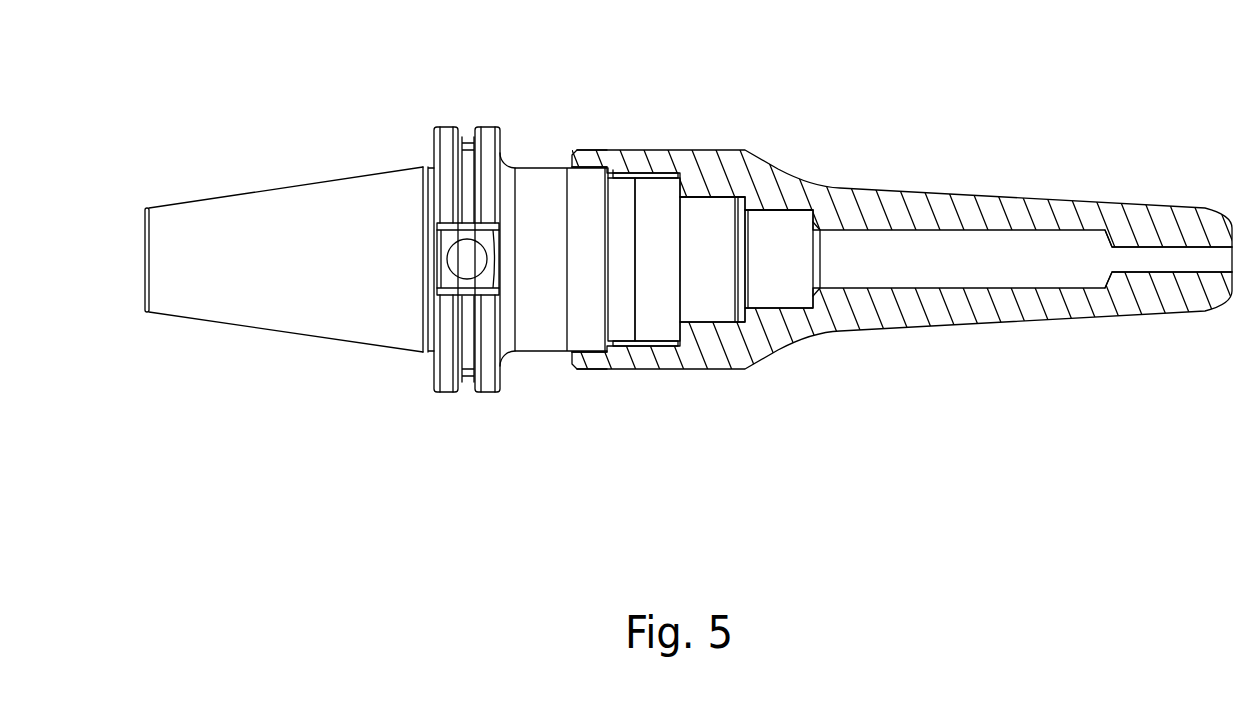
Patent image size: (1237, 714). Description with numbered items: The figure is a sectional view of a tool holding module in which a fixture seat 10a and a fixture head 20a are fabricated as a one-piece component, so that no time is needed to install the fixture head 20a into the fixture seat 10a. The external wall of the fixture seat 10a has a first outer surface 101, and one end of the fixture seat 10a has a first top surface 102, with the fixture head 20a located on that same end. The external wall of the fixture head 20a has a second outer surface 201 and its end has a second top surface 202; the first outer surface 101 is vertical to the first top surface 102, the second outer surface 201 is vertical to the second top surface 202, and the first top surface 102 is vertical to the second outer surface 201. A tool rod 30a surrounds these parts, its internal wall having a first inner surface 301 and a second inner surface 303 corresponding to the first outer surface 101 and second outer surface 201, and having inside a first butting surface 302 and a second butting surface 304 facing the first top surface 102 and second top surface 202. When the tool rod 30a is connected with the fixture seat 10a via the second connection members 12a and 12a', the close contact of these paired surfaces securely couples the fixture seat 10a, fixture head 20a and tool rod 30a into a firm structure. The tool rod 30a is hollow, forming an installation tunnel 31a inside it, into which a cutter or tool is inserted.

The fixture seat 10a is at (345, 177).
The second connection member 12a is at (645, 407).
The second connection member 12a' is at (645, 128).
The fixture head 20a is at (716, 296).
The tool rod 30a is at (1014, 325).
The installation tunnel 31a is at (1150, 257).
The first outer surface 101 is at (543, 98).
The first inner surface 301 is at (583, 150).
The first top surface 102 is at (696, 409).
The first butting surface 302 is at (705, 350).
The second outer surface 201 is at (740, 126).
The second inner surface 303 is at (712, 197).
The second top surface 202 is at (823, 170).
The second butting surface 304 is at (755, 208).